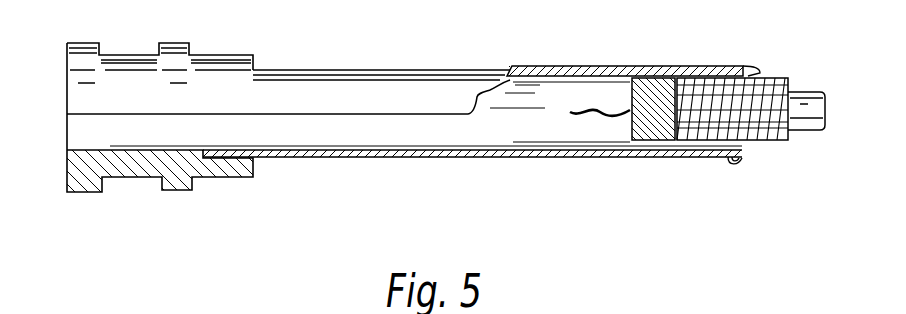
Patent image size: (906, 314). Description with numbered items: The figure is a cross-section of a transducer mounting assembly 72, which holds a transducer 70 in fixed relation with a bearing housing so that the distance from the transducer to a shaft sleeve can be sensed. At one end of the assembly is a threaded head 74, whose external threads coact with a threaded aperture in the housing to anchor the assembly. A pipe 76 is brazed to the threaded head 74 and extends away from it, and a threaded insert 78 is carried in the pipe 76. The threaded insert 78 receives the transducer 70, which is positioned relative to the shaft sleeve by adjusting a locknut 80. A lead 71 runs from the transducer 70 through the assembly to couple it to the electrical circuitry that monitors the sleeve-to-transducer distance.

The transducer 70 is at (807, 132).
The lead 71 is at (570, 110).
The transducer mounting assembly 72 is at (398, 178).
The threaded head 74 is at (217, 53).
The pipe 76 is at (402, 70).
The threaded insert 78 is at (760, 72).
The locknut 80 is at (732, 160).